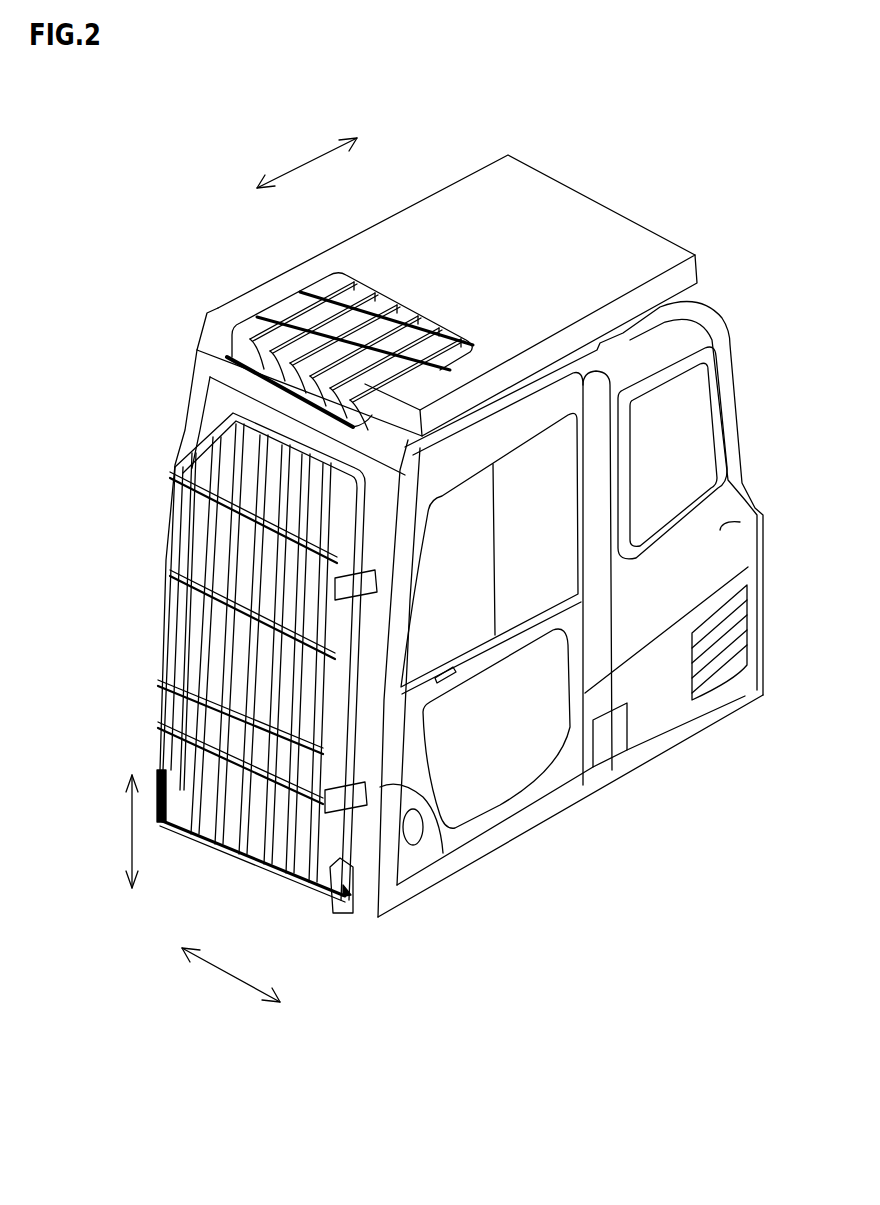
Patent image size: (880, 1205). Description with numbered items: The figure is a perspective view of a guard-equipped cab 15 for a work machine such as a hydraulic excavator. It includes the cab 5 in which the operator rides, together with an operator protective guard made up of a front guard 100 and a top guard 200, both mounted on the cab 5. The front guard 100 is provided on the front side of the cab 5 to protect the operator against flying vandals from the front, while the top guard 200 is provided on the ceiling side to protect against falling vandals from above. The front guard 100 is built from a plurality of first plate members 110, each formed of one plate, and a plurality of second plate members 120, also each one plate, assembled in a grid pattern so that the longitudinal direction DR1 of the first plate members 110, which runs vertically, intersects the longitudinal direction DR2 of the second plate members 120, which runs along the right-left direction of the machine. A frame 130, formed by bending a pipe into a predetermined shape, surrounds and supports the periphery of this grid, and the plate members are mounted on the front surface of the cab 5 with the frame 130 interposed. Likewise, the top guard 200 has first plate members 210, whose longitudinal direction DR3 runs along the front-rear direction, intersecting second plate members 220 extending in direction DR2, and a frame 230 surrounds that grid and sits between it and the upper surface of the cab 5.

The cab for the work machine 5 is at (647, 693).
The guard-equipped cab 15 is at (622, 173).
The front guard 100 is at (245, 777).
The first plate member 110 is at (182, 787).
The second plate member 120 is at (203, 493).
The frame 130 is at (340, 840).
The top guard 200 is at (317, 330).
The first plate member 210 is at (440, 317).
The second plate member 220 is at (317, 287).
The frame 230 is at (456, 205).
The longitudinal direction of first plate members of the front guard DR1 is at (132, 830).
The longitudinal direction of second plate members DR2 is at (225, 988).
The longitudinal direction of first plate members of the top guard DR3 is at (303, 157).